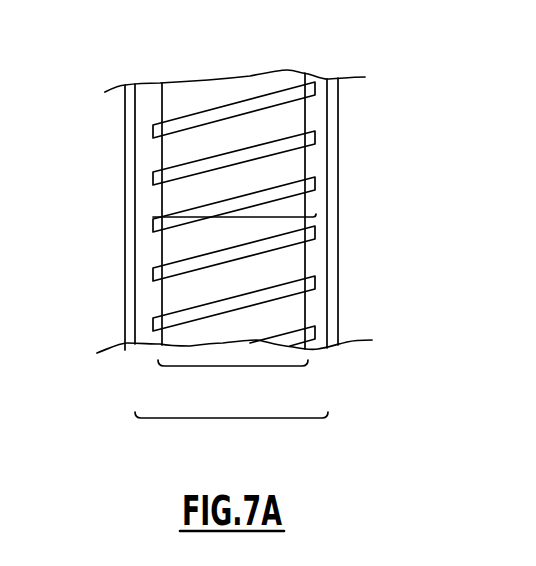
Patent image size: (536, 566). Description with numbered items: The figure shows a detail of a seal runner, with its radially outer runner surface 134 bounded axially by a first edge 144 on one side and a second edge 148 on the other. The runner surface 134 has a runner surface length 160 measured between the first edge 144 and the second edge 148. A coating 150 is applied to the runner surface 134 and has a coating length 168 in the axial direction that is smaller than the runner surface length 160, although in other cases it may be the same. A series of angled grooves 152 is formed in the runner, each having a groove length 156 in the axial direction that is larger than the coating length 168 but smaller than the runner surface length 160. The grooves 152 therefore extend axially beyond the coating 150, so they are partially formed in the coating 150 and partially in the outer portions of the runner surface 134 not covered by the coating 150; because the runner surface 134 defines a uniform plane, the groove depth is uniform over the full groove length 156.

The runner surface 134 is at (152, 97).
The first edge 144 is at (135, 158).
The second edge 148 is at (328, 155).
The coating 150 is at (176, 102).
The grooves 152 is at (280, 97).
The groove length 156 is at (290, 216).
The runner surface length 160 is at (245, 418).
The coating length 168 is at (253, 366).